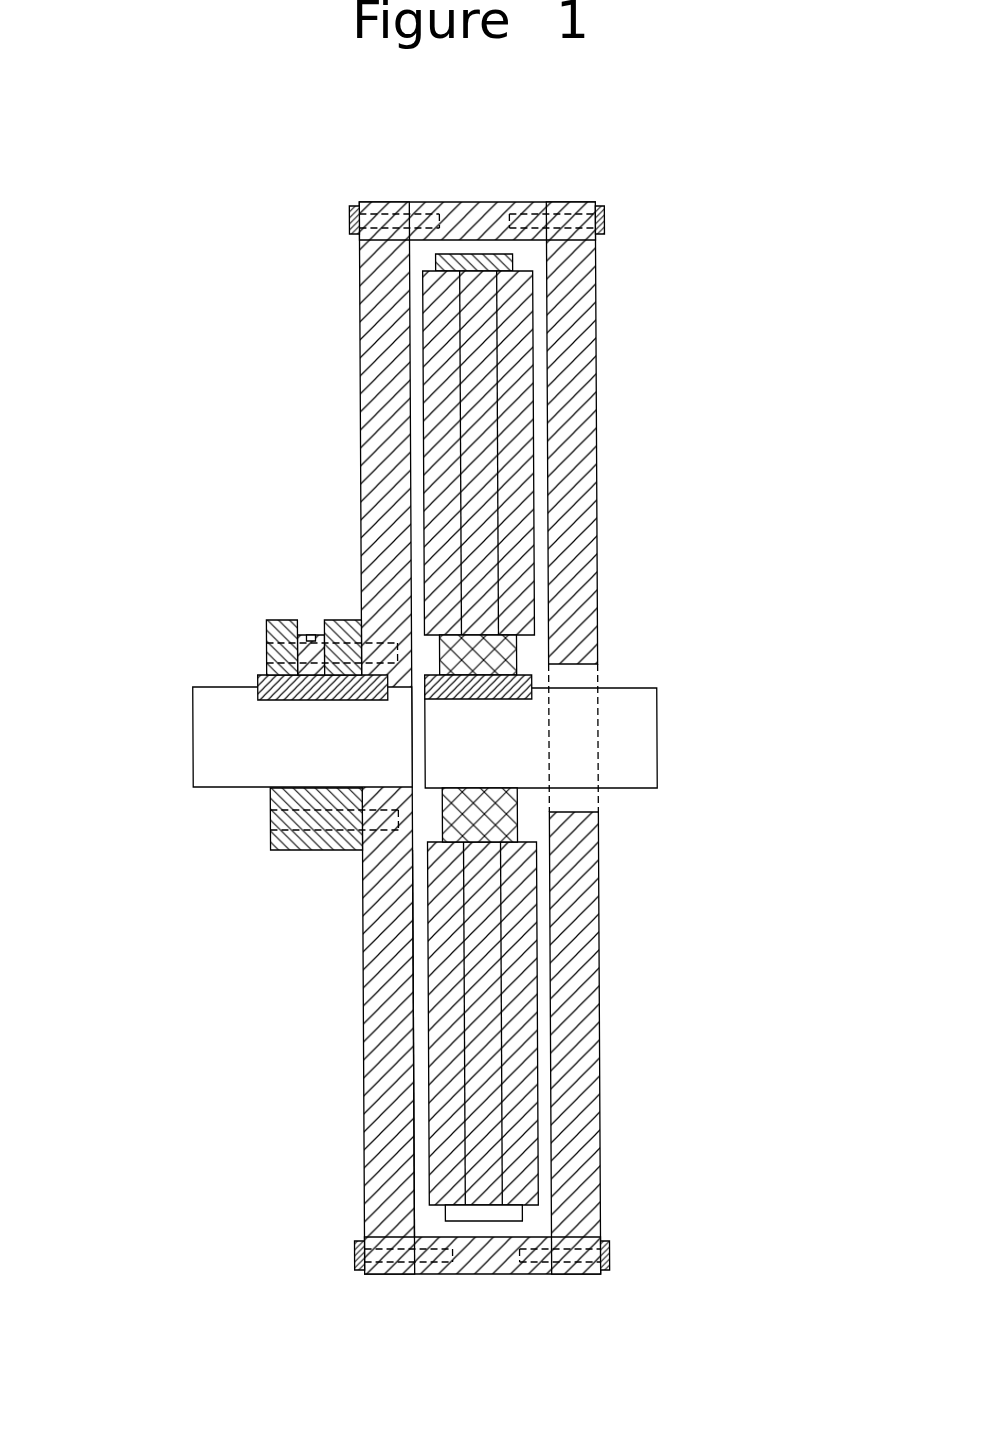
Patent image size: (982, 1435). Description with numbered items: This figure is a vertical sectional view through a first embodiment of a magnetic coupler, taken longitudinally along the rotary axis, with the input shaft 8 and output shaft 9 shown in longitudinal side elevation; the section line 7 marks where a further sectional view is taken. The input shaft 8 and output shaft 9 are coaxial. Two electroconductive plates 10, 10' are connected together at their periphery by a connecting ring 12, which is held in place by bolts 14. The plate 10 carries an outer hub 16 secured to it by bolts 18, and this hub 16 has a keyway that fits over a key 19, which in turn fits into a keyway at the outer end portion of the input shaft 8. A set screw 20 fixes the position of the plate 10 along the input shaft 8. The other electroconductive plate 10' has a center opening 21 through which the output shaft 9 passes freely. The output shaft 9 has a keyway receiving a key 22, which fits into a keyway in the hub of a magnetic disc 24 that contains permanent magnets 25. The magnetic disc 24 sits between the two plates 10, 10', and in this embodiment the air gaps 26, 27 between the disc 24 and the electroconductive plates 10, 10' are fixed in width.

The section line 7- 7 is at (455, 148).
The input shaft 8 is at (190, 737).
The output shaft 9 is at (660, 742).
The electroconductive plate 10 is at (314, 724).
The electroconductive plate 10' is at (650, 419).
The connecting ring 12 is at (522, 202).
The bolts 14 is at (357, 1254).
The outer hub 16 is at (315, 852).
The bolts 18 is at (265, 825).
The key 19 is at (252, 683).
The set screw 20 is at (313, 620).
The center opening 21 is at (585, 672).
The key 22 is at (535, 672).
The magnetic disc 24 is at (440, 255).
The permanent magnets 25 is at (482, 1090).
The air gap 26 is at (418, 1013).
The air gap 27 is at (543, 1068).